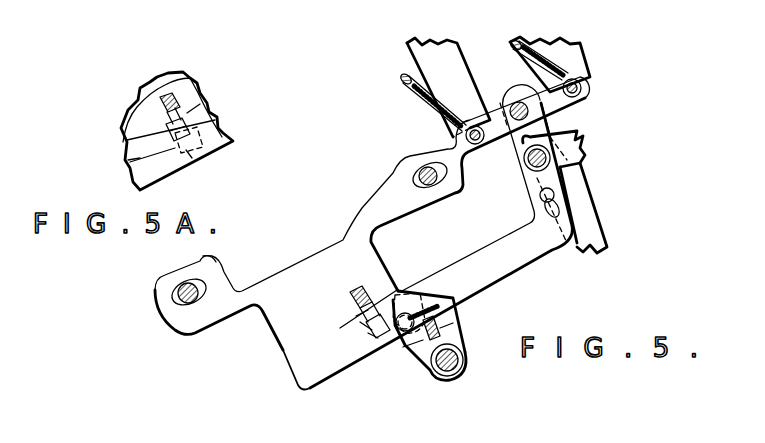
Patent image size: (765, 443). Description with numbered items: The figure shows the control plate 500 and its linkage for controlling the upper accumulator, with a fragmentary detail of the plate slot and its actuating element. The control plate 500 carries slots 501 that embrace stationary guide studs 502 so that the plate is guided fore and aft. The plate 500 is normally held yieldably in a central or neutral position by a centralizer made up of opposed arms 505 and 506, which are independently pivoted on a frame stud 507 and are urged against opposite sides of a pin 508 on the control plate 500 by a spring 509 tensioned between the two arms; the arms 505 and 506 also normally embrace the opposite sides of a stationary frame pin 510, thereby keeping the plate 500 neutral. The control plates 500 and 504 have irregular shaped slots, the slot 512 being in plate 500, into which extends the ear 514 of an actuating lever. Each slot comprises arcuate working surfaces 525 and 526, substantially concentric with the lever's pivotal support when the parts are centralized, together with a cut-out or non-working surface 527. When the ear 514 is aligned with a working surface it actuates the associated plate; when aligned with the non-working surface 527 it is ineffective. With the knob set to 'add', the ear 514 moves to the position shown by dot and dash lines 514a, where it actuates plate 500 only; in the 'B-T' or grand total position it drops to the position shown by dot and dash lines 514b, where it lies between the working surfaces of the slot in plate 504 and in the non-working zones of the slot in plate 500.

In FIG. 5A, the control plate 500 is at (127, 118).
In FIG. 5, the control plate 500 is at (374, 239).
In FIG. 5, the slots 501 is at (201, 262).
In FIG. 5, the stationary guide studs 502 is at (183, 288).
In FIG. 5A, the control plate 504 is at (130, 138).
In FIG. 5, the centralizer arm 505 is at (462, 300).
In FIG. 5, the centralizer arm 506 is at (413, 353).
In FIG. 5, the frame stud 507 is at (458, 380).
In FIG. 5, the pin 508 is at (413, 288).
In FIG. 5, the spring 509 is at (447, 328).
In FIG. 5, the stationary frame pin 510 is at (462, 340).
In FIG. 5, the irregular shaped slot 512 is at (356, 316).
In FIG. 5A, the ear 514 is at (187, 113).
In FIG. 5, the ear 514 is at (360, 322).
In FIG. 5A, the dot and dash lines 514a is at (213, 132).
In FIG. 5A, the dot and dash lines 514b is at (190, 156).
In FIG. 5A, the arcuate working surface 525 is at (156, 101).
In FIG. 5, the arcuate working surface 525 is at (350, 296).
In FIG. 5A, the arcuate working surface 526 is at (184, 72).
In FIG. 5, the arcuate working surface 526 is at (378, 266).
In FIG. 5A, the non-working surface 527 is at (133, 160).
In FIG. 5, the non-working surface 527 is at (368, 333).